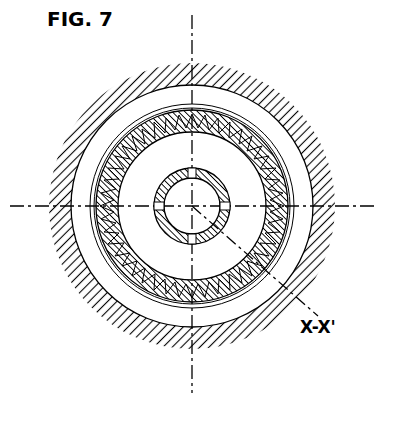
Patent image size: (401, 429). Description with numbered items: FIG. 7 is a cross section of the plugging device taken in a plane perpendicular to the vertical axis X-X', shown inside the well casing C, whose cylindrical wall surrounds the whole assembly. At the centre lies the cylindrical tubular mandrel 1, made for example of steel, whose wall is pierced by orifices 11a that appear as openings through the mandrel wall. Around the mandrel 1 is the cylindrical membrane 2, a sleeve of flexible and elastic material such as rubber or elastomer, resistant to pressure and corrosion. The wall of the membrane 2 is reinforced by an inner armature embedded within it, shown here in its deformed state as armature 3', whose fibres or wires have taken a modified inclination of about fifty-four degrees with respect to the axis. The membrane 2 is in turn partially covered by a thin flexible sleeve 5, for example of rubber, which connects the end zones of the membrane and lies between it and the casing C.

The tubular mandrel 1 is at (172, 238).
The membrane 2 is at (258, 136).
The deformed armature 3' is at (157, 206).
The sleeve 5 is at (96, 167).
The orifices 11a is at (191, 166).
The casing C is at (119, 108).